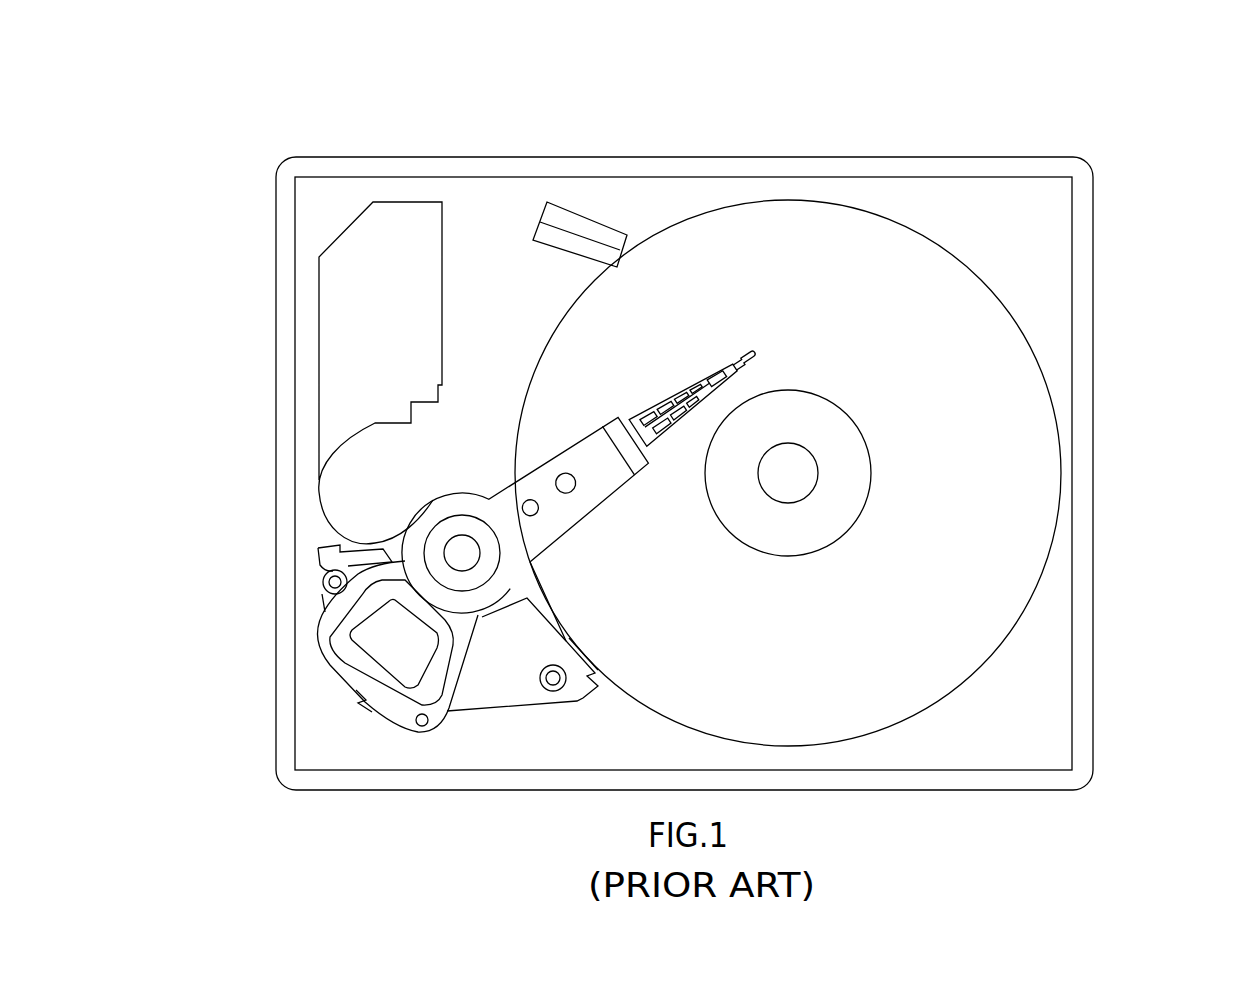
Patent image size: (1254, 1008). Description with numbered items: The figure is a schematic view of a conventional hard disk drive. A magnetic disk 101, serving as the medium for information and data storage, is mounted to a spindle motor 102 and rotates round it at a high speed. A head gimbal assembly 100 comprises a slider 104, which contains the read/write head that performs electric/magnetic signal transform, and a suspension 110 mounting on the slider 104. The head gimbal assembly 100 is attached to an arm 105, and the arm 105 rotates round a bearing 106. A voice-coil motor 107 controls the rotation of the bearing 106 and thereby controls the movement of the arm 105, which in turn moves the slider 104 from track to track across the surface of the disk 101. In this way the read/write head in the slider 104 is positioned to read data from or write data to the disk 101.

The head gimbal assembly 100 is at (657, 403).
The magnetic disk 101 is at (977, 547).
The spindle motor 102 is at (787, 473).
The slider 104 is at (717, 367).
The arm 105 is at (548, 496).
The bearing 106 is at (462, 553).
The voice-coil motor 107 is at (422, 695).
The suspension 110 is at (683, 393).